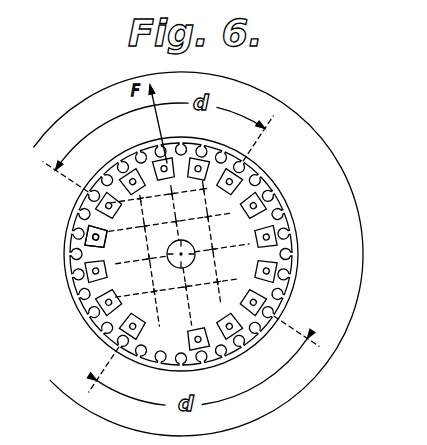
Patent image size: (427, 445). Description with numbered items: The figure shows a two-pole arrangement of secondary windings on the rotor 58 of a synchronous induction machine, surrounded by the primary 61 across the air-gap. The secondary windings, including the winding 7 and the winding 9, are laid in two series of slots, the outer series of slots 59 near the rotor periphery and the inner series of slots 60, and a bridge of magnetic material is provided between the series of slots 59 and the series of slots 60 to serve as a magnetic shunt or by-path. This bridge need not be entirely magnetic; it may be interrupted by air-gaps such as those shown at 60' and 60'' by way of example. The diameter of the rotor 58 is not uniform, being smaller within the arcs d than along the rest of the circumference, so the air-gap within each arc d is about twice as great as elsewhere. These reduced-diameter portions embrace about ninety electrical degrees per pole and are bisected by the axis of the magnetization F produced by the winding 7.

The winding 7 is at (169, 221).
The winding 9 is at (167, 274).
The rotor 58 is at (167, 366).
The series of slots 59 is at (284, 219).
The series of slots 60 is at (154, 248).
The air-gap 60' is at (68, 236).
The air-gap 60'' is at (217, 355).
The primary 61 is at (313, 128).